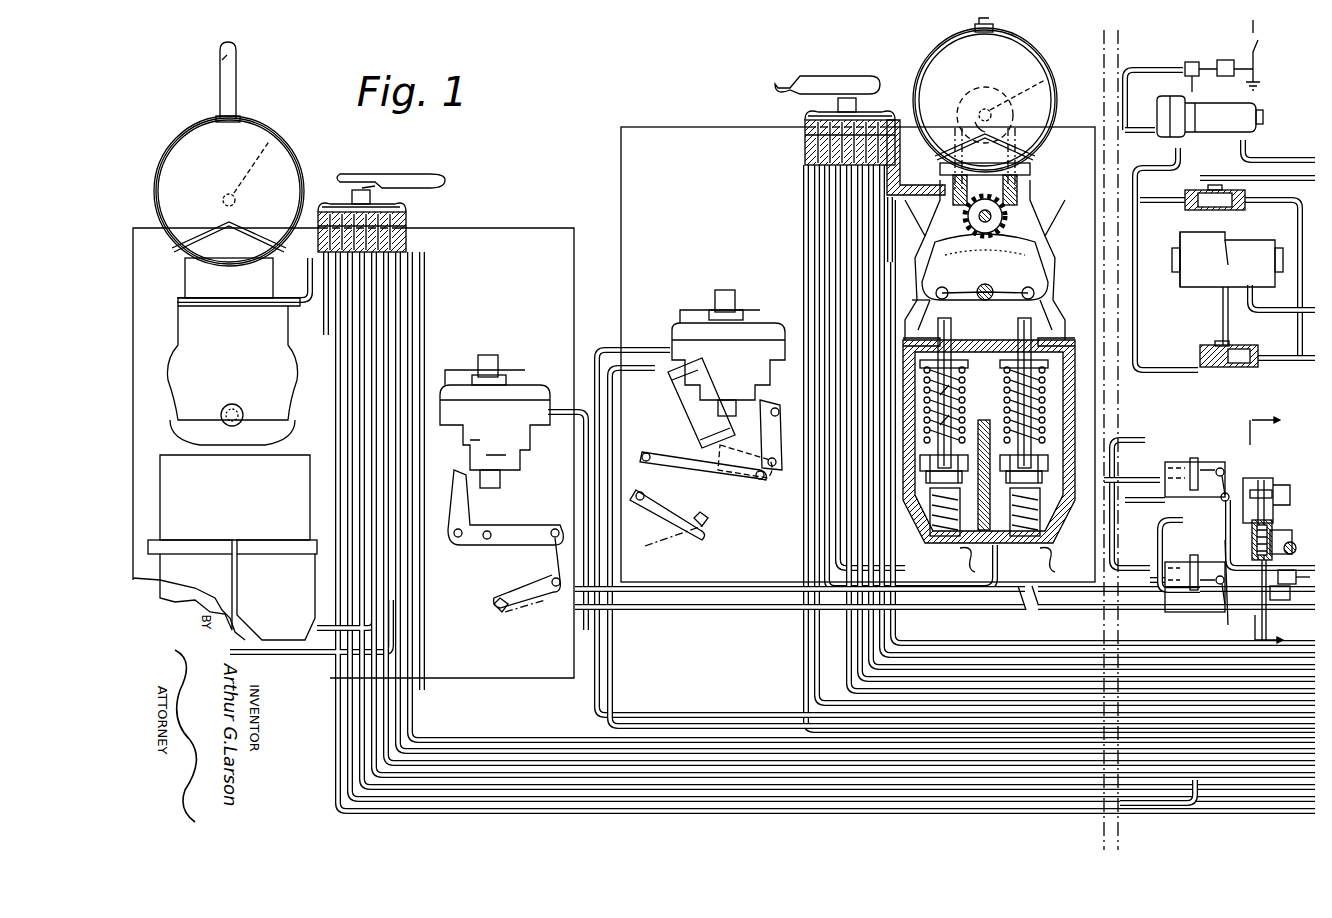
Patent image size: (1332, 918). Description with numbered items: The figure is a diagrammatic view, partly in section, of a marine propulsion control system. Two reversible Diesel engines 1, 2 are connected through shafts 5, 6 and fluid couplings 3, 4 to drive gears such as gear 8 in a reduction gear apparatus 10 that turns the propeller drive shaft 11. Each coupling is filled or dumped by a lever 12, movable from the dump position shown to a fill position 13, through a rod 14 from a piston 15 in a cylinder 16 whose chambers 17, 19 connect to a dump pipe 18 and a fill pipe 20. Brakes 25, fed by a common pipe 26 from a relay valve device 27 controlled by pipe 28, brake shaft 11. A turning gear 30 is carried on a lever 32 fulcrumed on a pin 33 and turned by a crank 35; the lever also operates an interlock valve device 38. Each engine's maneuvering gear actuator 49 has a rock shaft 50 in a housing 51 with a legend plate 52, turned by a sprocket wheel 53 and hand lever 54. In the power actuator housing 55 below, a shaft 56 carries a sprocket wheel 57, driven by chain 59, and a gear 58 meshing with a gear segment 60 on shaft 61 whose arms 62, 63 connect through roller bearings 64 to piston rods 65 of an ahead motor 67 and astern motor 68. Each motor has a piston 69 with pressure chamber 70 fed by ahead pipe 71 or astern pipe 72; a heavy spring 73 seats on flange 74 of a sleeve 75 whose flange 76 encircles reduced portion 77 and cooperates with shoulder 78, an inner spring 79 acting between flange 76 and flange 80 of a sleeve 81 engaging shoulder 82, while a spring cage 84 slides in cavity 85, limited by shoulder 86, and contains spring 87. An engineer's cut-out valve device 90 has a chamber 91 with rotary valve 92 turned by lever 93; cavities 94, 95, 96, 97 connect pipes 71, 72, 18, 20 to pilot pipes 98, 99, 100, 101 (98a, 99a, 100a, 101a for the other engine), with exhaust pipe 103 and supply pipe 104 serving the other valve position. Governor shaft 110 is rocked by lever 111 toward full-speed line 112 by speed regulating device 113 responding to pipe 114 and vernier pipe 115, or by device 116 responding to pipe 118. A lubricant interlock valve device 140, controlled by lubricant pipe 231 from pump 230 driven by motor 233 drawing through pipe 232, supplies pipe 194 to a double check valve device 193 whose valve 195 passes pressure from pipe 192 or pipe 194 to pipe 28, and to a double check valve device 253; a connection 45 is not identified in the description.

The engine 1 is at (621, 152).
The engine 2 is at (556, 228).
The fluid coupling 3 is at (1220, 470).
The fluid coupling 4 is at (1210, 625).
The shaft 5 is at (1118, 470).
The shaft 6 is at (1042, 610).
The drive gear 8 is at (1273, 530).
The reduction gear apparatus 10 is at (1258, 478).
The drive shaft 11 is at (1280, 530).
The lever 12 is at (1222, 466).
The dot and dash line 13 is at (1227, 527).
The rod 14 is at (1212, 462).
The piston 15 is at (1172, 462).
The cylinder 16 is at (1194, 458).
The pressure chamber 17 is at (1180, 462).
The dump pipe 18 is at (326, 345).
The pressure chamber 19 is at (1168, 568).
The fill pipe 20 is at (386, 385).
The brakes 25 is at (1262, 478).
The brake control pipe 26 is at (1290, 316).
The relay valve device 27 is at (1254, 242).
The pipe 28 is at (1222, 310).
The gear 30 is at (1255, 520).
The lever 32 is at (1262, 640).
The pin 33 is at (1265, 490).
The hand operated crank 35 is at (1286, 584).
The interlock valve device 38 is at (1282, 600).
The pipe 45 is at (1298, 350).
The maneuvering gear actuator 49 is at (158, 190).
The rock shaft 50 is at (270, 140).
The housing 51 is at (205, 137).
The plate 52 is at (262, 140).
The sprocket wheel 53 is at (984, 142).
The hand operated lever 54 is at (238, 78).
The power actuator housing 55 is at (185, 276).
The shaft 56 is at (1006, 210).
The sprocket wheel 57 is at (1018, 188).
The gear 58 is at (992, 216).
The chain 59 is at (1030, 160).
The gear segment 60 is at (1040, 250).
The shaft 61 is at (236, 403).
The arm 62 is at (918, 308).
The arm 63 is at (1036, 293).
The roller bearings 64 is at (1050, 312).
The piston rods 65 is at (1018, 336).
The ahead fluid motor 67 is at (298, 452).
The astern fluid motor 68 is at (162, 456).
The piston 69 is at (1063, 480).
The pressure chamber 70 is at (1012, 562).
The ahead control pipe 71 is at (370, 286).
The astern control pipe 72 is at (385, 330).
The precompressed spring 73 is at (1050, 410).
The outturned flange 74 is at (1058, 362).
The sleeve 75 is at (1050, 372).
The inwardly extending flange 76 is at (1050, 448).
The reduced portion 77 is at (925, 448).
The shoulder 78 is at (1046, 432).
The precompressed coil spring 79 is at (922, 385).
The flange 80 is at (920, 364).
The sleeve 81 is at (924, 405).
The shoulder 82 is at (955, 380).
The spring cage 84 is at (1048, 530).
The cavity 85 is at (1048, 465).
The annular shoulder 86 is at (920, 468).
The precompressed spring 87 is at (930, 498).
The engineer's cut-out valve device 90 is at (313, 214).
The chamber 91 is at (404, 206).
The rotary valve 92 is at (406, 232).
The hand operated lever 93 is at (420, 172).
The cavity 94 is at (830, 112).
The cavity 95 is at (805, 160).
The cavity 96 is at (868, 112).
The cavity 97 is at (850, 112).
The pipe 98 is at (855, 245).
The pipe 98a is at (380, 312).
The pipe 99 is at (815, 265).
The pipe 99a is at (398, 352).
The pipe 100 is at (872, 250).
The pipe 100a is at (372, 365).
The pipe 101 is at (850, 232).
The pipe 101a is at (398, 405).
The pipe 103 is at (326, 326).
The supply pipe 104 is at (775, 730).
The speed governor control shaft 110 is at (500, 612).
The lever 111 is at (520, 520).
The dash and dot line 112 is at (540, 606).
The speed regulating device 113 is at (708, 322).
The control pipe 114 is at (658, 350).
The vernier control pipe 115 is at (660, 372).
The speed regulating device 116 is at (542, 392).
The pipe 118 is at (582, 445).
The turning gear lubricant interlock valve device 140 is at (1250, 110).
The pipe 192 is at (1274, 368).
The double check valve device 193 is at (1212, 352).
The pipe 194 is at (1150, 360).
The double check valve 195 is at (1220, 368).
The pump 230 is at (1191, 62).
The pipe 231 is at (1127, 120).
The pipe 232 is at (1196, 92).
The electric motor 233 is at (1226, 60).
The double check valve device 253 is at (1200, 188).